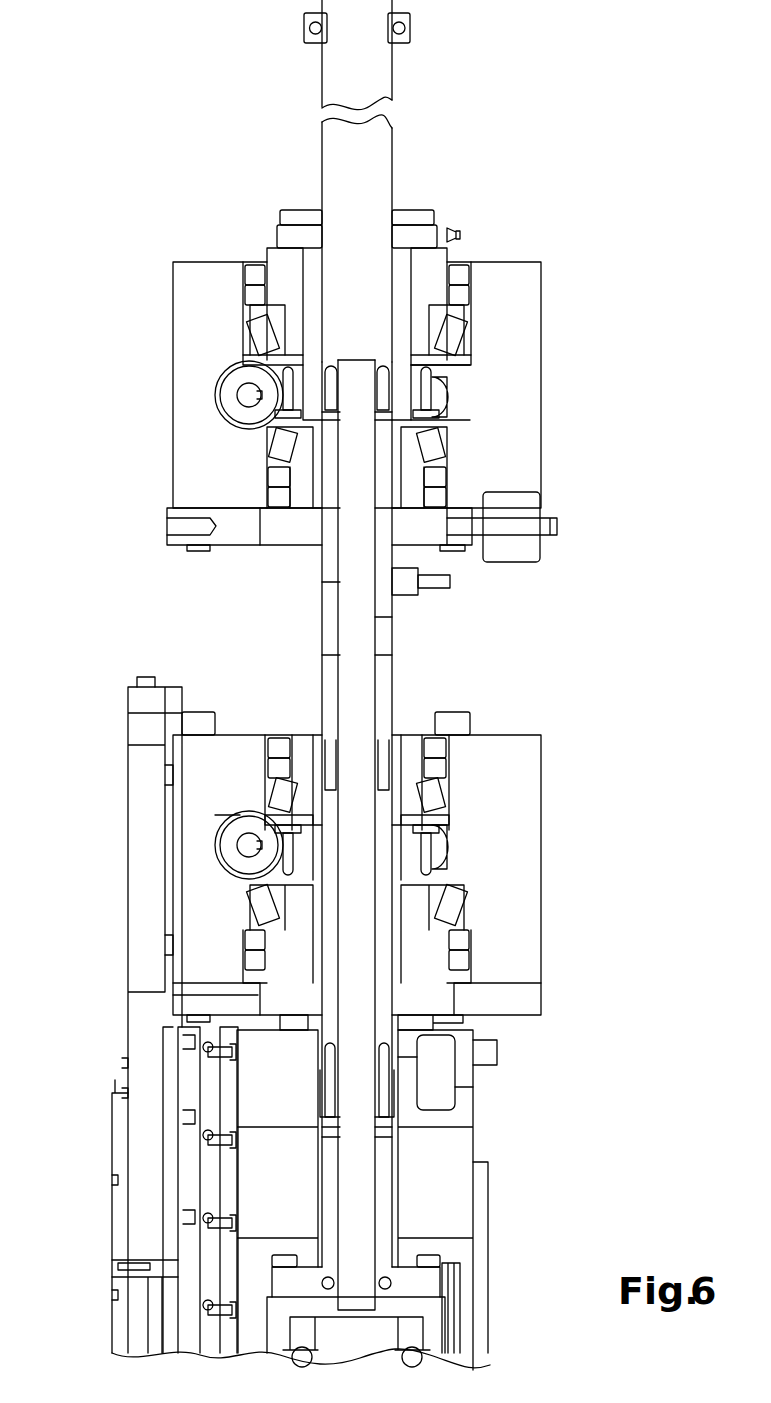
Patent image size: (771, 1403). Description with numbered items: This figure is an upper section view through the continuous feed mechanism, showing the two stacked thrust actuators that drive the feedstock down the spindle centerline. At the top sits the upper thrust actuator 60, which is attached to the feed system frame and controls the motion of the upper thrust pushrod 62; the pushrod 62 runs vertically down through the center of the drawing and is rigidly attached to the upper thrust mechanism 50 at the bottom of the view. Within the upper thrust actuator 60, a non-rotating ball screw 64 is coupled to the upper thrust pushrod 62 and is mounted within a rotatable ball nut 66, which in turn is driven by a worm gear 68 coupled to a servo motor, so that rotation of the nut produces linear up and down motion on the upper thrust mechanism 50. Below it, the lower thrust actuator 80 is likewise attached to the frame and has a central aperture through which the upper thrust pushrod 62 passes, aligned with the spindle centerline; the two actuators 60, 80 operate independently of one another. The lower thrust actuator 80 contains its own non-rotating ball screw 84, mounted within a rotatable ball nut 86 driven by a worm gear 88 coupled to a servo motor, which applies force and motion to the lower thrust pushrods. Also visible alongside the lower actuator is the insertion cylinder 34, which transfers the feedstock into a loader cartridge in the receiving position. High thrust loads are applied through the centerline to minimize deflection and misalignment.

The insertion cylinder 34 is at (145, 1042).
The upper thrust mechanism 50 is at (427, 1317).
The upper thrust actuator 60 is at (100, 210).
The upper thrust pushrod 62 is at (357, 615).
The ball screw 64 is at (457, 408).
The ball nut 66 is at (447, 388).
The worm gear 68 is at (218, 384).
The lower thrust actuator 80 is at (538, 708).
The ball screw 84 is at (210, 815).
The ball nut 86 is at (445, 843).
The worm gear 88 is at (215, 845).